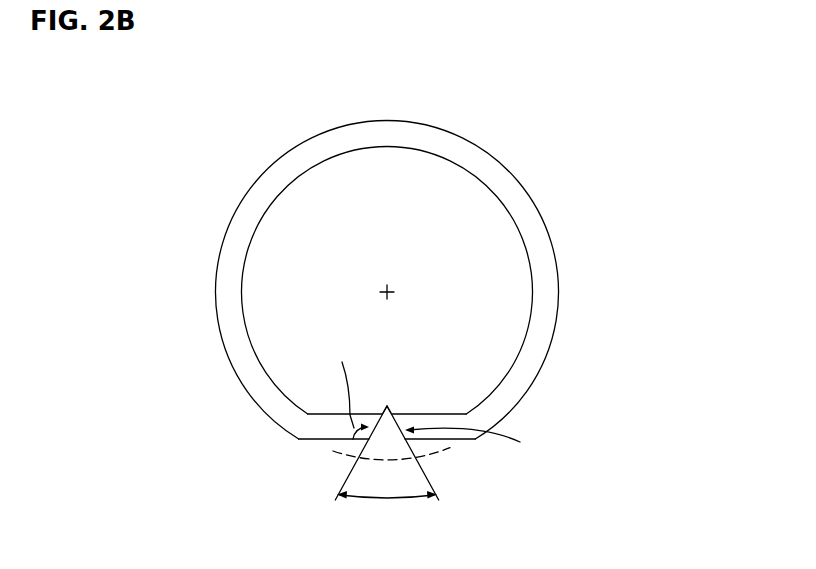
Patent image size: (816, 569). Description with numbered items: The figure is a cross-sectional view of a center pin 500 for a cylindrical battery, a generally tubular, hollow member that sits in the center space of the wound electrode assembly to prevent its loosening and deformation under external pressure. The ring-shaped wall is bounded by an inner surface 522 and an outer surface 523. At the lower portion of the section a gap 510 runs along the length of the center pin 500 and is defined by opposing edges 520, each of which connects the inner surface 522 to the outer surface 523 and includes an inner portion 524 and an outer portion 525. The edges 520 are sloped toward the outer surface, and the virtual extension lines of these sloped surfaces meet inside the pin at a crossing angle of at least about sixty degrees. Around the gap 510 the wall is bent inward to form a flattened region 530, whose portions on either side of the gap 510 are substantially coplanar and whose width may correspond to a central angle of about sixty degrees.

The center pin 500 is at (369, 303).
The inner surface 522 is at (260, 217).
The outer surface 523 is at (215, 287).
The inner portion 524 is at (373, 420).
The gap 510 is at (400, 398).
The opposing edges 520 is at (405, 423).
The outer portion 525 is at (358, 432).
The flattened region 530 is at (336, 433).